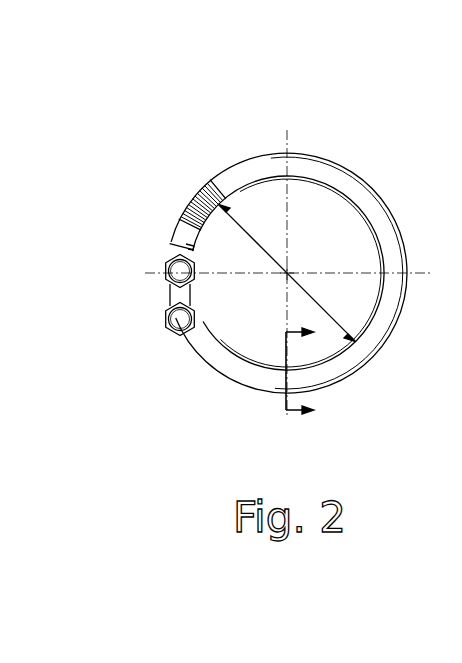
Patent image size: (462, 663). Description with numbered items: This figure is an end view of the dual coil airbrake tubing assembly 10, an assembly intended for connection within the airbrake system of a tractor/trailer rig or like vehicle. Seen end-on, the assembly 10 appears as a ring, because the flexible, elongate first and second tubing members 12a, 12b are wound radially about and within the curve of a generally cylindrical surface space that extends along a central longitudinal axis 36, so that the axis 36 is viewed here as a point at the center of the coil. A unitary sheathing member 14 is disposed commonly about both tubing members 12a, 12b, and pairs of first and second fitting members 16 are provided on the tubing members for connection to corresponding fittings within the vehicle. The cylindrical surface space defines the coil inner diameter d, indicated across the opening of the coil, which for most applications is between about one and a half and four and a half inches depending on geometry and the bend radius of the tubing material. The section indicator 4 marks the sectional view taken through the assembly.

The dual coil airbrake tubing assembly 10 is at (275, 239).
The first tubing member 12a is at (175, 243).
The second tubing member 12b is at (198, 303).
The unitary sheathing member 14 is at (229, 168).
The fitting members 16 is at (166, 284).
The central longitudinal axis 36 is at (287, 273).
The coil inner diameter d is at (247, 230).
The section line 4- 4 is at (302, 382).